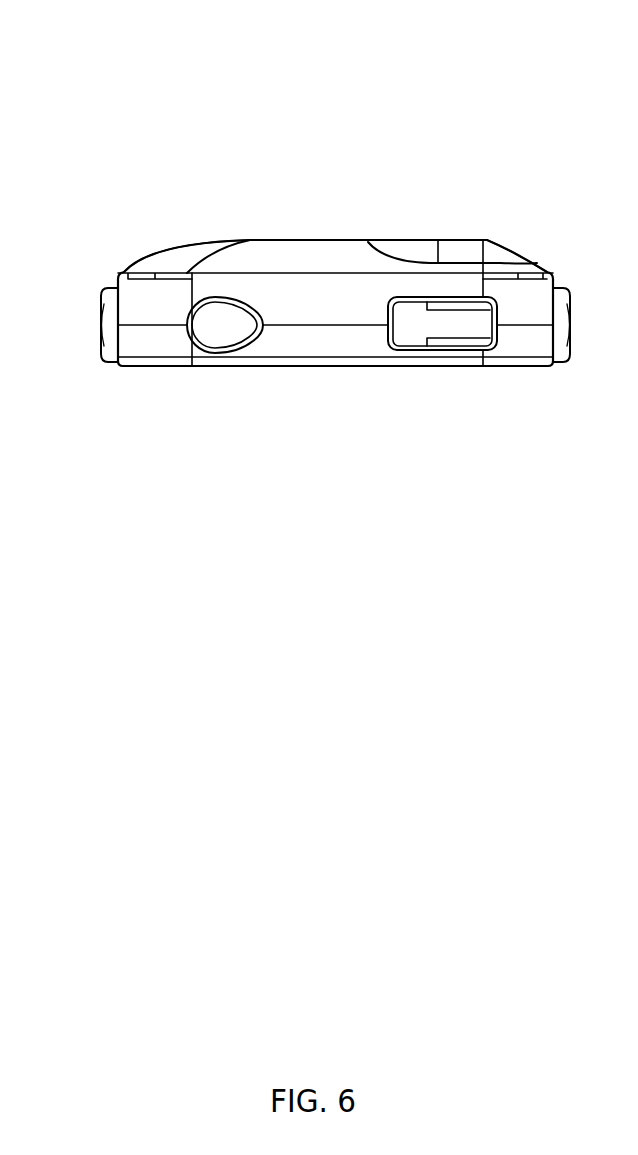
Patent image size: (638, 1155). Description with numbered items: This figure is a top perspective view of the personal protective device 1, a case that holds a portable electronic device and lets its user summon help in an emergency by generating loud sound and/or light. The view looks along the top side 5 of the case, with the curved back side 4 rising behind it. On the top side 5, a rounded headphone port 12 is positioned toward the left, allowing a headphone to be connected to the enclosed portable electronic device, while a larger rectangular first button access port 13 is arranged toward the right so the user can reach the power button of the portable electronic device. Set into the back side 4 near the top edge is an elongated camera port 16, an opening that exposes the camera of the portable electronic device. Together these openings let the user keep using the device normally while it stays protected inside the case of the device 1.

The personal protective device 1 is at (158, 74).
The back side 4 is at (310, 239).
The top side 5 is at (315, 339).
The headphone port 12 is at (208, 323).
The first button access port 13 is at (453, 327).
The camera port 16 is at (452, 255).